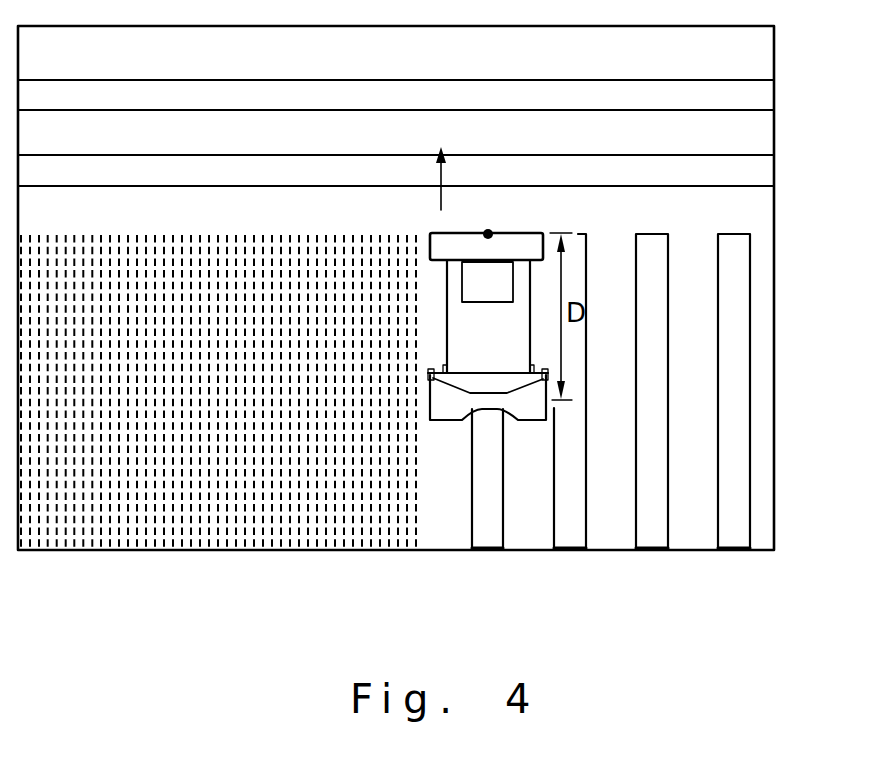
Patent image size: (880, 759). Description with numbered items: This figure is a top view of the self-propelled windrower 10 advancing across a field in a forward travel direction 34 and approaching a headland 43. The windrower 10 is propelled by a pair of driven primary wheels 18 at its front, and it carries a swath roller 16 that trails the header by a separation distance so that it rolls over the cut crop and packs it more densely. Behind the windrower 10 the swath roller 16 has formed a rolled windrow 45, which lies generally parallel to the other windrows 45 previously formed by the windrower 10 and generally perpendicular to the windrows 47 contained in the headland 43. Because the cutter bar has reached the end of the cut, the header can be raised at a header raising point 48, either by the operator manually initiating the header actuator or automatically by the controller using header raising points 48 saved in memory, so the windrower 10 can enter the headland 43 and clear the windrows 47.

The self-propelled windrower 10 is at (598, 282).
The swath roller 16 is at (546, 417).
The primary wheels 18 is at (536, 233).
The forward travel direction 34 is at (438, 193).
The headland 43 is at (763, 55).
The rolled windrow 45 is at (487, 533).
The windrows in the headland 47 is at (762, 98).
The header raising point 48 is at (488, 234).